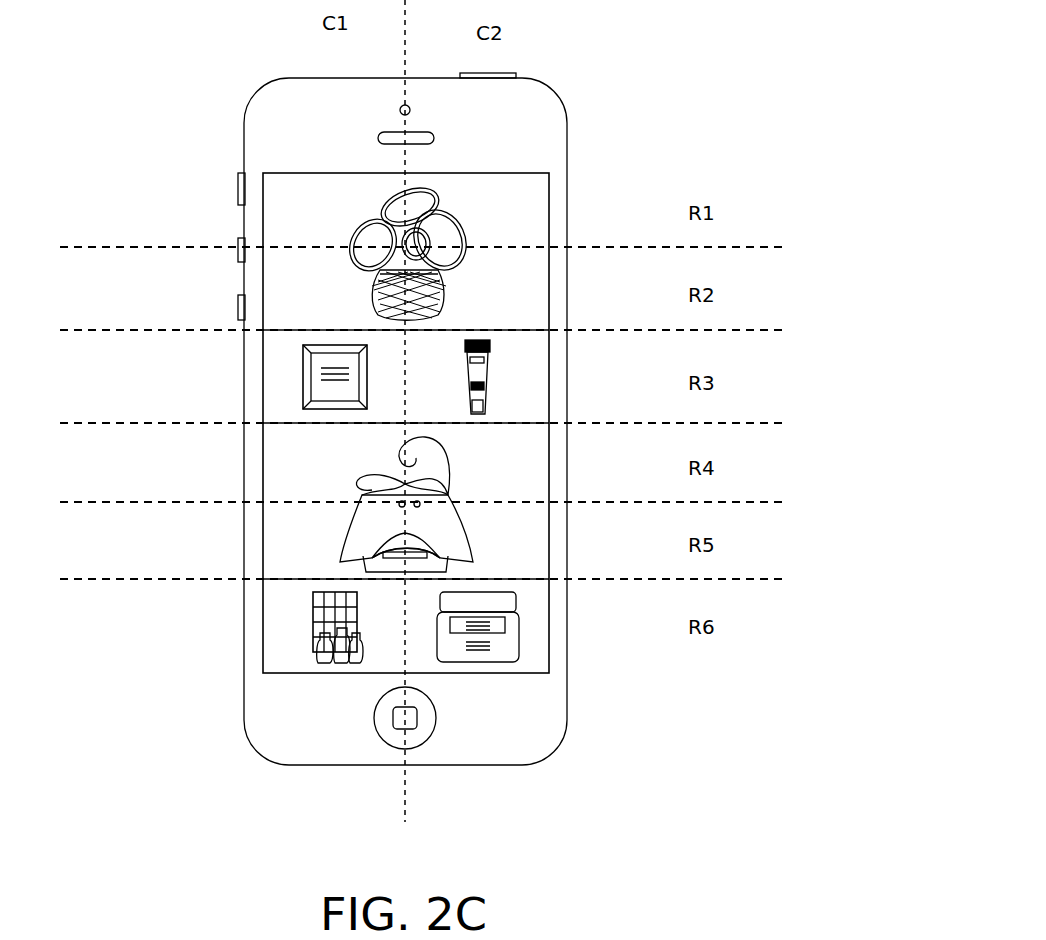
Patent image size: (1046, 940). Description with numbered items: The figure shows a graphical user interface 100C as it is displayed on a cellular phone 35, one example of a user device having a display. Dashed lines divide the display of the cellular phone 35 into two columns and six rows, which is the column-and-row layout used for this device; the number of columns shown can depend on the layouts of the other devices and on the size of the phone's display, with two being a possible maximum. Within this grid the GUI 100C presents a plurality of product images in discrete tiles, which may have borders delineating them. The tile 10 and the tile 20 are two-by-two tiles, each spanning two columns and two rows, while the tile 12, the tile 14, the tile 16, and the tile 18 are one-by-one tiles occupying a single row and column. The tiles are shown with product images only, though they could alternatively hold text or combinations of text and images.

The graphical user interface 100C is at (636, 80).
The cellular phone 35 is at (212, 452).
The tile 10 is at (560, 232).
The tile 12 is at (252, 375).
The tile 14 is at (560, 381).
The tile 20 is at (560, 484).
The tile 16 is at (252, 621).
The tile 18 is at (560, 628).